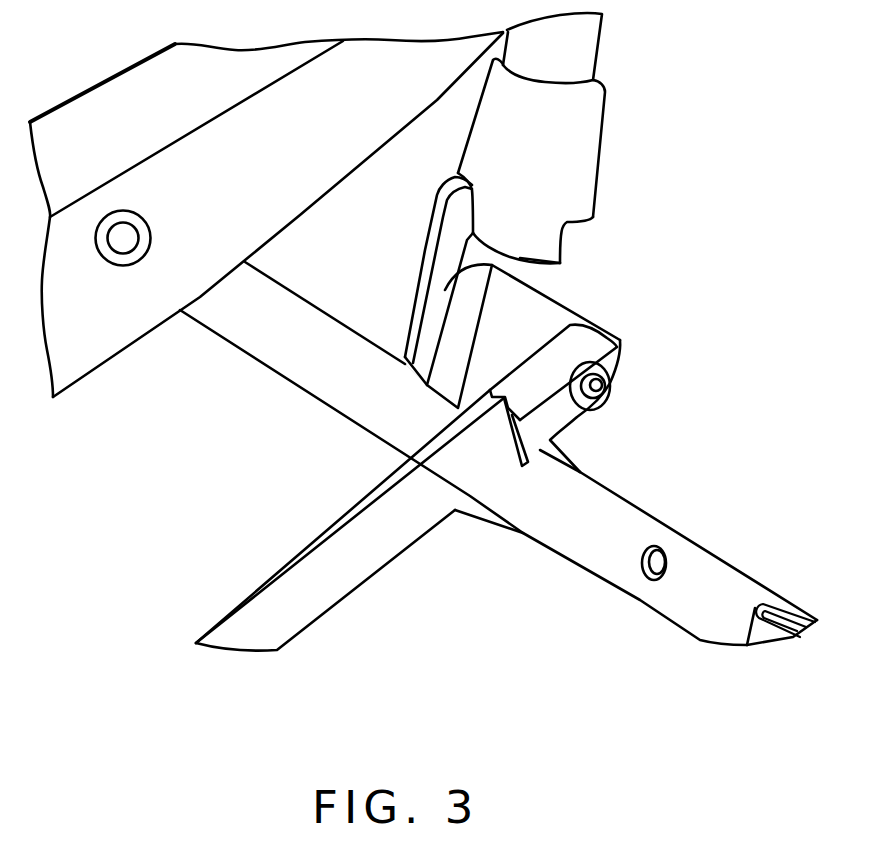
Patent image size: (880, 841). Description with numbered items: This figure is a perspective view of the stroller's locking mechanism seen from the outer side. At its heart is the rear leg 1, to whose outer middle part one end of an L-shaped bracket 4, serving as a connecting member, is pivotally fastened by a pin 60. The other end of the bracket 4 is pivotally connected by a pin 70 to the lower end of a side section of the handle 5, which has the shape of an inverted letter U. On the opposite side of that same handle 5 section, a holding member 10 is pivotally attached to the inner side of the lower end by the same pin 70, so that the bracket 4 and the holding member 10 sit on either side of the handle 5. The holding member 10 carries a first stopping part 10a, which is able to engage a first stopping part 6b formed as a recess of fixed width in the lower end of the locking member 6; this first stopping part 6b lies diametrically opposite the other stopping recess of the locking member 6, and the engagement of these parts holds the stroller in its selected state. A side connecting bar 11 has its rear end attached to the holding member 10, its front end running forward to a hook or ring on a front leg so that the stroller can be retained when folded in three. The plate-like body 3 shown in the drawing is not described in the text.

The rear leg 1 is at (748, 572).
The side plate 3 is at (112, 88).
The L-shaped bracket 4 is at (420, 223).
The handle 5 is at (600, 55).
The locking member 6 is at (597, 158).
The first stopping part 6b is at (562, 243).
The holding member 10 is at (570, 302).
The first stopping part 10a is at (447, 398).
The side connecting bar 11 is at (268, 583).
The pin 60 is at (643, 552).
The pin 70 is at (602, 388).